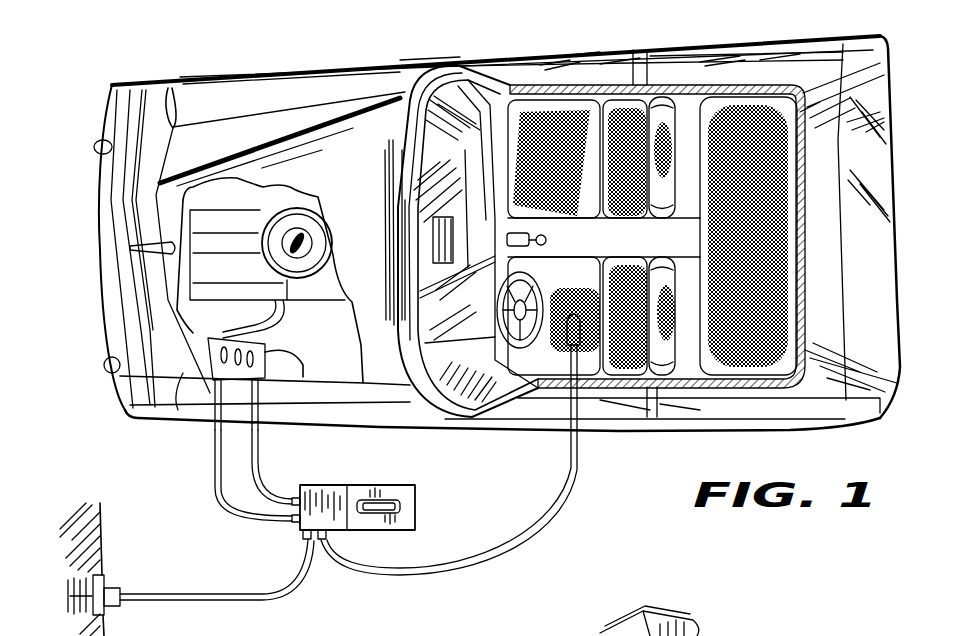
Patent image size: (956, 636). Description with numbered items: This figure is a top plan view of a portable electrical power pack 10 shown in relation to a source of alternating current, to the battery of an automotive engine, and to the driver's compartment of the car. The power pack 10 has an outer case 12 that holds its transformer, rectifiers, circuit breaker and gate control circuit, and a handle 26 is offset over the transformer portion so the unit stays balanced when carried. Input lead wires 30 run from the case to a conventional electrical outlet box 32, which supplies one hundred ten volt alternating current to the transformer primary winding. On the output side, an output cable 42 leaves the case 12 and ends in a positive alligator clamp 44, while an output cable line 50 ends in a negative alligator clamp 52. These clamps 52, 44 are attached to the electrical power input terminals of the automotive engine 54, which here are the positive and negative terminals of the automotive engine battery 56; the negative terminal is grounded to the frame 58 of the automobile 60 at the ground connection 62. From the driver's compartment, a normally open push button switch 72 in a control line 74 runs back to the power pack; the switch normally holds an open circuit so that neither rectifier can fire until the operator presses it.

The portable electrical power pack 10 is at (415, 503).
The outer case 12 is at (313, 484).
The handle 26 is at (378, 500).
The input lead wires 30 is at (178, 602).
The electrical outlet box 32 is at (103, 573).
The output cable 42 is at (215, 488).
The positive alligator clamp 44 is at (183, 422).
The output cable line 50 is at (252, 463).
The negative alligator clamp 52 is at (267, 341).
The automotive engine 54 is at (260, 200).
The automotive engine battery 56 is at (210, 370).
The frame 58 is at (325, 388).
The automobile 60 is at (404, 38).
The ground connection 62 is at (301, 362).
The push button switch 72 is at (587, 306).
The control line 74 is at (578, 497).